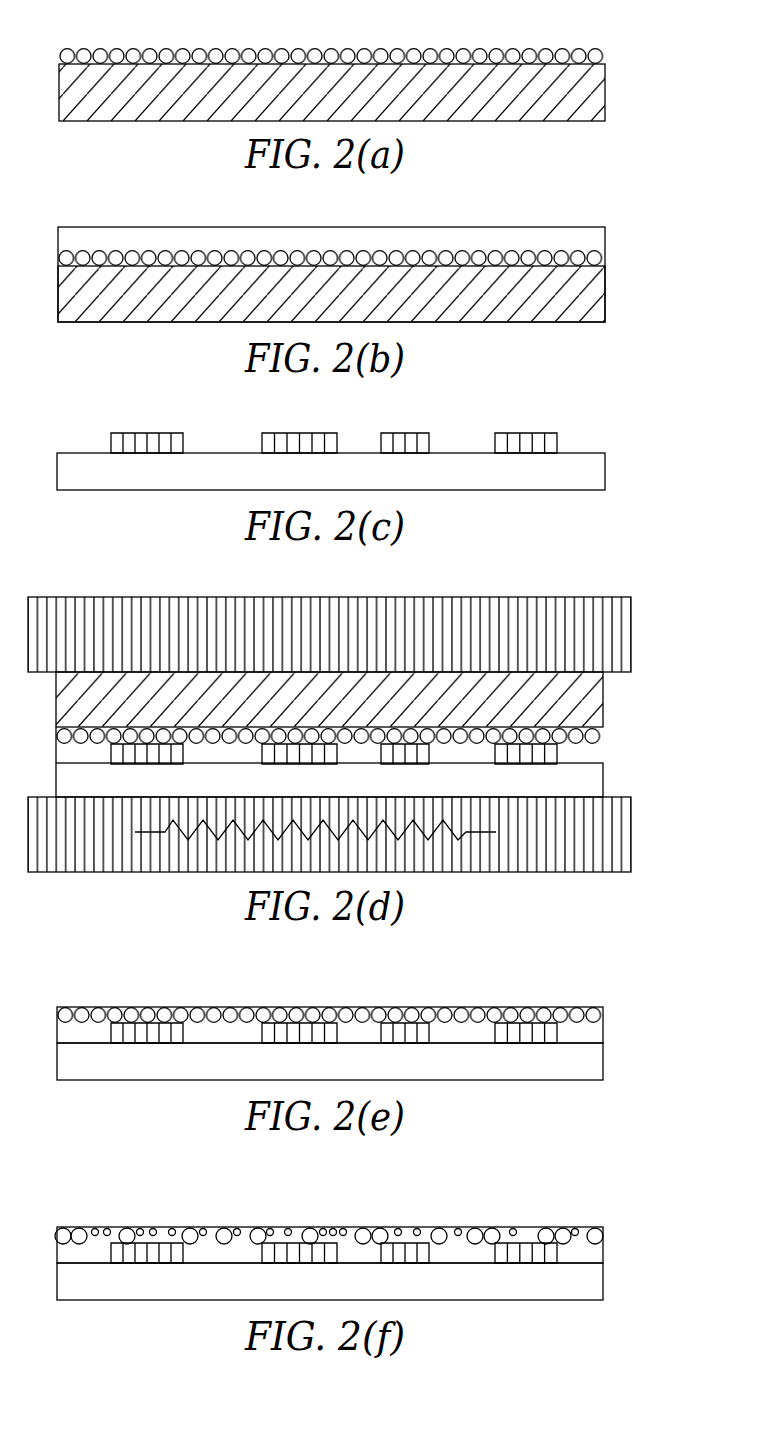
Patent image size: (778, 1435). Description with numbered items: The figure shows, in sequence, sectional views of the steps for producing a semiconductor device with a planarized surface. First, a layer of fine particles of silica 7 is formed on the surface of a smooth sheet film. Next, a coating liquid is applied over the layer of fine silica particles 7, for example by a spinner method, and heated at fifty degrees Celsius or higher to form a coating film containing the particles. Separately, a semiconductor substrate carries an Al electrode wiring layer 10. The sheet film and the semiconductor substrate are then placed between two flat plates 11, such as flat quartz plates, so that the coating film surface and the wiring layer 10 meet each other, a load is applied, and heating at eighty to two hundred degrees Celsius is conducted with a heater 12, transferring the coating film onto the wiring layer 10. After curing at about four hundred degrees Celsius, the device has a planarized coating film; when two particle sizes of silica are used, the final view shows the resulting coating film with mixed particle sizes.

The layer of fine particles of silica 7 is at (568, 50).
The Al electrode wiring layer 10 is at (553, 432).
The flat plate (quartz plate) 11 is at (607, 621).
The heater 12 is at (480, 838).